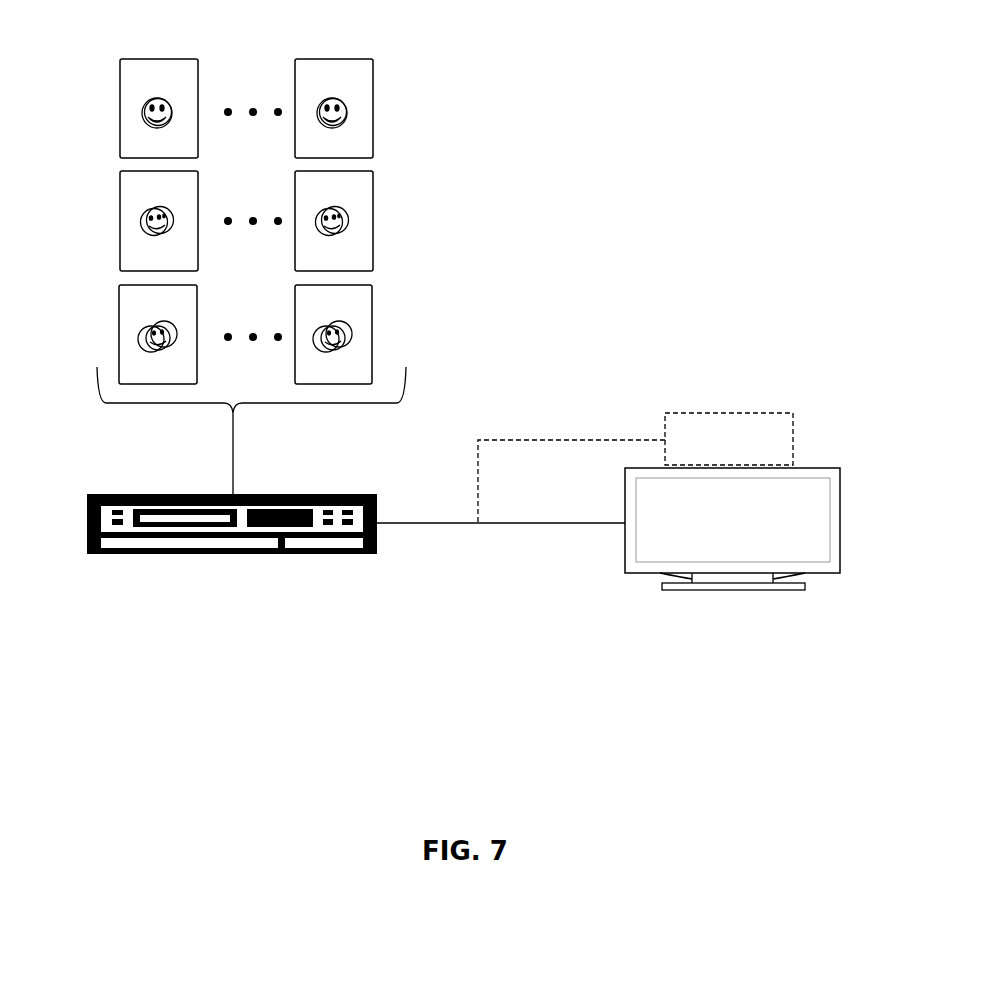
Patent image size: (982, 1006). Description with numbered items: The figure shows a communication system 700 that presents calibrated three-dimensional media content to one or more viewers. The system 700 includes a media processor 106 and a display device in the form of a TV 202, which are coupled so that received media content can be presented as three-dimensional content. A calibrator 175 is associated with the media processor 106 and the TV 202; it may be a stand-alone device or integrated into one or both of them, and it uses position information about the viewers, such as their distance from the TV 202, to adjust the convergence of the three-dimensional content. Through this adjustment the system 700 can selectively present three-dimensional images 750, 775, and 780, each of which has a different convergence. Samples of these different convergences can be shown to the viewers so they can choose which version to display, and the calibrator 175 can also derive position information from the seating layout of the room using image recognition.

The communication system 700 is at (441, 432).
The 3D image 780 is at (126, 90).
The 3D image 775 is at (120, 212).
The 3D image 750 is at (120, 303).
The media processor 106 is at (175, 494).
The calibrator 175 is at (635, 468).
The TV 202 is at (732, 529).